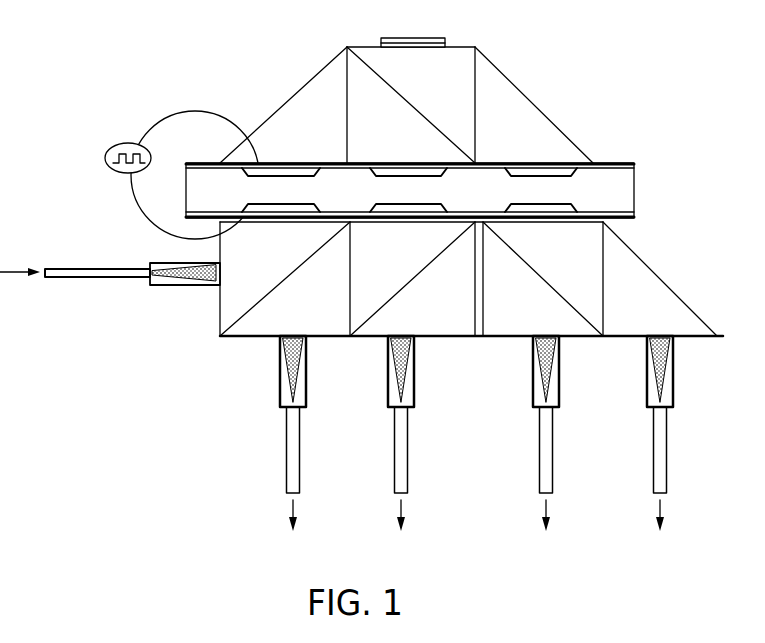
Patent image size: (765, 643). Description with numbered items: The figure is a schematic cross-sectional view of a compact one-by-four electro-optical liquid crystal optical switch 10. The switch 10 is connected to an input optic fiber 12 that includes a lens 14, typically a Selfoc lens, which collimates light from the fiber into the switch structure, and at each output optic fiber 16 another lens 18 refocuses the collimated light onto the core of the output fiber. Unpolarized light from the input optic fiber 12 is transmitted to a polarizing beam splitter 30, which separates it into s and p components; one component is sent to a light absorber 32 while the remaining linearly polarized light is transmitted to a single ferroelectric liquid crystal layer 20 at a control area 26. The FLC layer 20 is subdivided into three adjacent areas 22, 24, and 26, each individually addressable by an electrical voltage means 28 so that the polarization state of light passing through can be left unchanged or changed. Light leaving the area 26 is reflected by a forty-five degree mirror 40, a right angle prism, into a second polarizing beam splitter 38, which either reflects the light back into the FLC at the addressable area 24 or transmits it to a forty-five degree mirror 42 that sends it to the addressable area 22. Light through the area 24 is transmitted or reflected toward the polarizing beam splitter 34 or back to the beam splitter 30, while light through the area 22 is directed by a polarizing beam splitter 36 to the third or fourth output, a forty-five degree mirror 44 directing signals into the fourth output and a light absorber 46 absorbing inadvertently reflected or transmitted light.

The optical switch 10 is at (565, 98).
The input optic fiber 12 is at (82, 278).
The lens 14 is at (178, 287).
The output optic fiber 16 is at (287, 472).
The lens 18 is at (280, 392).
The ferroelectric liquid crystal layer 20 is at (637, 176).
The addressable FLC area 22 is at (563, 180).
The addressable FLC area 24 is at (425, 180).
The control area 26 is at (303, 178).
The electrical voltage means 28 is at (122, 143).
The polarizing beam splitter 30 is at (252, 308).
The light absorber 32 is at (486, 299).
The polarizing beam splitter 34 is at (380, 308).
The polarizing beam splitter 36 is at (525, 258).
The polarizing beam splitter 38 is at (382, 75).
The 45° mirror 40 is at (319, 74).
The 45° mirror 42 is at (495, 66).
The 45° mirror 44 is at (644, 262).
The light absorber 46 is at (396, 38).